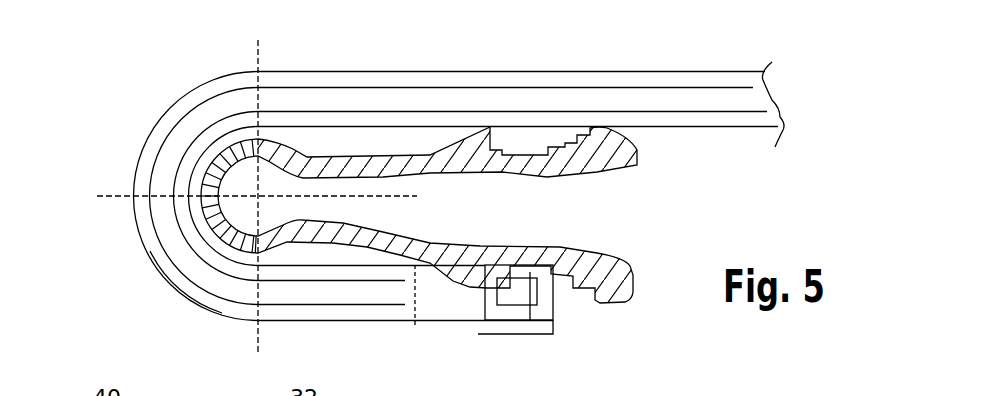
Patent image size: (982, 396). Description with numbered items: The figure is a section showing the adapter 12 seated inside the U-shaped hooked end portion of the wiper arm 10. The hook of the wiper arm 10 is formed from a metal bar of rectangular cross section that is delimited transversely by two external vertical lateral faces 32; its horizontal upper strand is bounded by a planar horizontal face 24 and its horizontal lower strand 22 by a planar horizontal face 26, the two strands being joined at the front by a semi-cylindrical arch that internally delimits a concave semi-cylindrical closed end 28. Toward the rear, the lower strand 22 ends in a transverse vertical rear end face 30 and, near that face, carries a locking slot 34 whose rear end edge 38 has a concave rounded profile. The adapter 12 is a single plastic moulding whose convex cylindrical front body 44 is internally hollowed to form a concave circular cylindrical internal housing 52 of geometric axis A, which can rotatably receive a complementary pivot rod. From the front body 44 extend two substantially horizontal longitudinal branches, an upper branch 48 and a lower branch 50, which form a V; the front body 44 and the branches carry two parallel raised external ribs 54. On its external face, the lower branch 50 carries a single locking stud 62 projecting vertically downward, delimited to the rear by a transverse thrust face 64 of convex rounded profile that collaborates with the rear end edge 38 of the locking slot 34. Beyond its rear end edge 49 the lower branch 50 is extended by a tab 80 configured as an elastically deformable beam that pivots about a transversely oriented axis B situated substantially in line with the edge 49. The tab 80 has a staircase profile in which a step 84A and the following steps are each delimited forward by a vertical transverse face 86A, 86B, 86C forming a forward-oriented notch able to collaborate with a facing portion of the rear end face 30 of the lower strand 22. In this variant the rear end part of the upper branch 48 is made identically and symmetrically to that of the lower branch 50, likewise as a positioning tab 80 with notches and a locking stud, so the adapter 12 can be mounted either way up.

The wiper arm 10 is at (716, 53).
The adapter 12 is at (347, 142).
The lower strand 22 is at (245, 318).
The planar horizontal face 24 is at (385, 127).
The planar horizontal face 26 is at (300, 267).
The concave semi-cylindrical closed end 28 is at (202, 227).
The rear end face 30 is at (568, 300).
The external vertical lateral face 32 is at (571, 98).
The locking slot 34 is at (460, 300).
The rear end edge 38 is at (483, 292).
The front body 44 is at (192, 185).
The upper branch 48 is at (372, 160).
The rear longitudinal end 49 is at (488, 246).
The lower branch 50 is at (348, 247).
The concave circular cylindrical internal housing 52 is at (242, 176).
The raised external rib 54 is at (215, 162).
The locking stud 62 is at (443, 283).
The transverse thrust face 64 is at (511, 257).
The tab 80 is at (652, 155).
The step 84A is at (577, 246).
The vertical transverse face 86A is at (530, 305).
The vertical transverse face 86B is at (563, 292).
The vertical transverse face 86C is at (587, 300).
The geometric axis A is at (221, 314).
The transversely oriented axis B is at (470, 256).